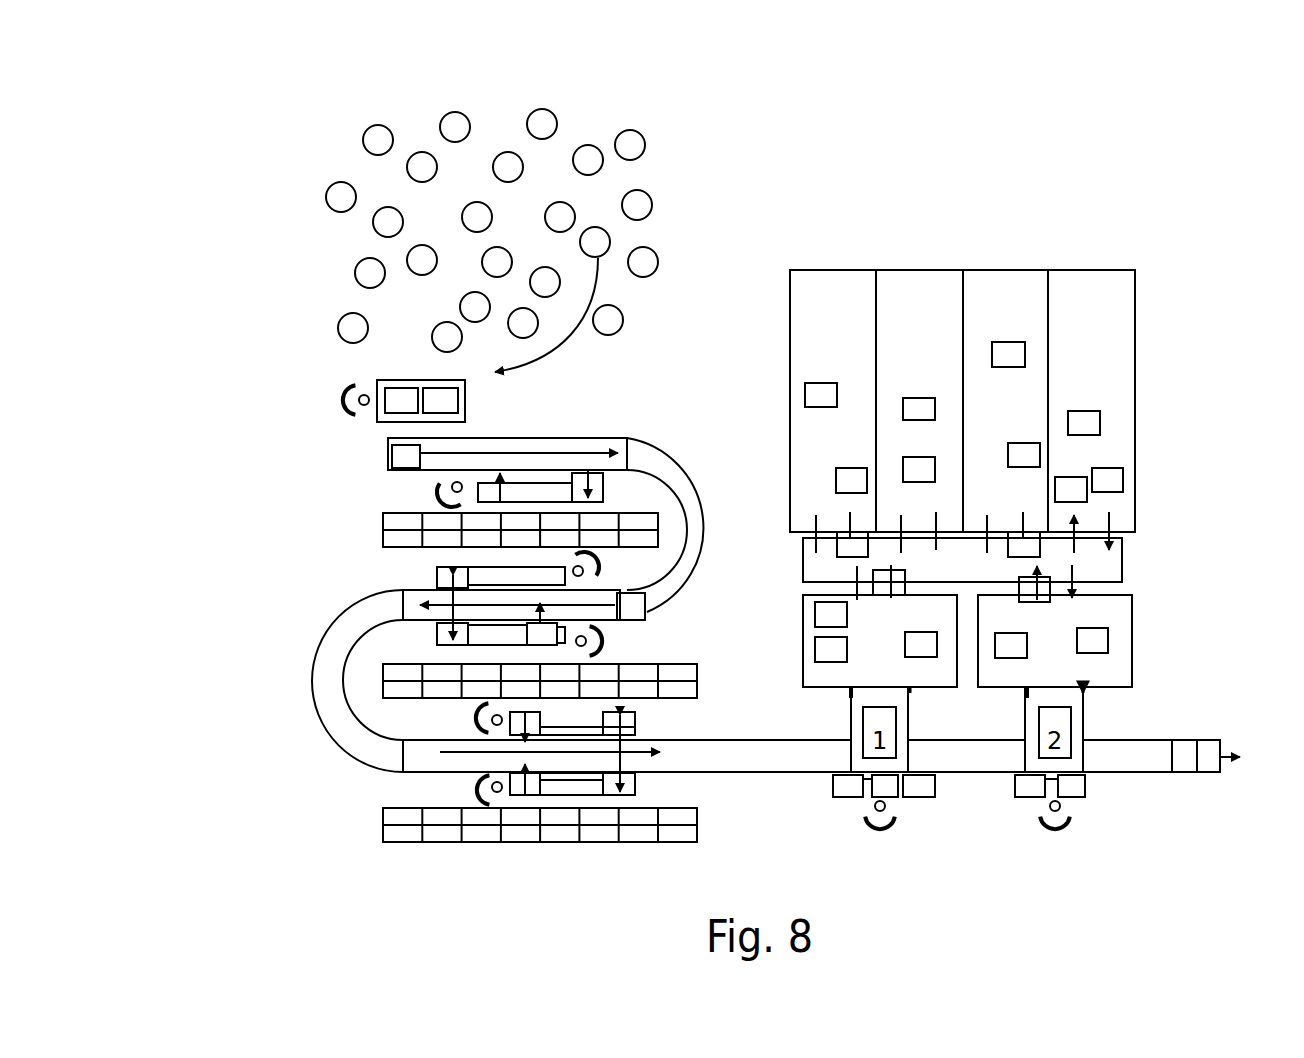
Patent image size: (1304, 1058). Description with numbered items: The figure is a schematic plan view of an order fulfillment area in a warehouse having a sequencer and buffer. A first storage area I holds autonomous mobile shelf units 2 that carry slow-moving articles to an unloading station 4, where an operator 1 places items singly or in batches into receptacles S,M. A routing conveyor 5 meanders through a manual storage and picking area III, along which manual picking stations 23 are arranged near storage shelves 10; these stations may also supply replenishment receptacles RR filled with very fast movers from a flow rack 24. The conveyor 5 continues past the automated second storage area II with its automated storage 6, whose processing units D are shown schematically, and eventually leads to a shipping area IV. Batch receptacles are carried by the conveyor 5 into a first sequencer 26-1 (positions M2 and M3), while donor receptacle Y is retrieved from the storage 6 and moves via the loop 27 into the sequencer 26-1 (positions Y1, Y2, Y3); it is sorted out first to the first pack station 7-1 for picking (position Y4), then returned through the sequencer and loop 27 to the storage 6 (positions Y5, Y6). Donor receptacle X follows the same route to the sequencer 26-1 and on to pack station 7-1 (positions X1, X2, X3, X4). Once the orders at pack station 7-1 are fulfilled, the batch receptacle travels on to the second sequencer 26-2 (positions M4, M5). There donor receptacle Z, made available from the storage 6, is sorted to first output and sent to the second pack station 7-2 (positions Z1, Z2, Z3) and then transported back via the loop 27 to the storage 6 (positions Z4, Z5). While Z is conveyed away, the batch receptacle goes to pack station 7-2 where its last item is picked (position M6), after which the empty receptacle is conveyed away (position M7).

The first storage area I is at (300, 182).
The autonomous mobile shelf unit 2 is at (541, 125).
The operator 1 is at (322, 395).
The unloading station 4 is at (490, 397).
The routing conveyor 5 is at (700, 492).
The single receptacle and batch receptacle S,M is at (396, 470).
The manual storage and picking area III is at (337, 567).
The batch receptacle position M2 is at (646, 604).
The manual picking station 23 is at (620, 640).
The storage shelves 10 is at (392, 710).
The replenishment receptacle RR is at (534, 790).
The flow rack 24 is at (405, 866).
The automated second storage area II is at (1155, 322).
The automated storage 6 is at (1108, 290).
The processing unit D is at (952, 389).
The donor receptacle X position X1 is at (836, 484).
The donor receptacle Y position Y6 is at (908, 458).
The donor receptacle Y position Y1 is at (1016, 444).
The donor receptacle Z position Z5 is at (1080, 478).
The donor receptacle Z position Z1 is at (1122, 475).
The loop 27 is at (1135, 559).
The donor receptacle X position X2 is at (836, 548).
The donor receptacle Y position Y2 is at (1013, 532).
The donor receptacle X position X3 is at (906, 578).
The donor receptacle Z position Z4 is at (1045, 581).
The first sequencer 26-1 is at (830, 680).
The donor receptacle Y position Y5 is at (815, 614).
The batch receptacle position M3 is at (815, 650).
The donor receptacle Y position Y3 is at (912, 646).
The second sequencer 26-2 is at (1125, 648).
The batch receptacle position M5 is at (1024, 638).
The donor receptacle Z position Z2 is at (1103, 638).
The donor receptacle Y position Y4 is at (840, 796).
The batch receptacle position M4 is at (891, 797).
The donor receptacle X position X4 is at (918, 797).
The first pack station 7-1 is at (887, 834).
The donor receptacle Z position Z3 is at (1030, 797).
The batch receptacle position M6 is at (1086, 788).
The second pack station 7-2 is at (1065, 834).
The batch receptacle position M7 is at (1184, 748).
The shipping area IV is at (1244, 759).